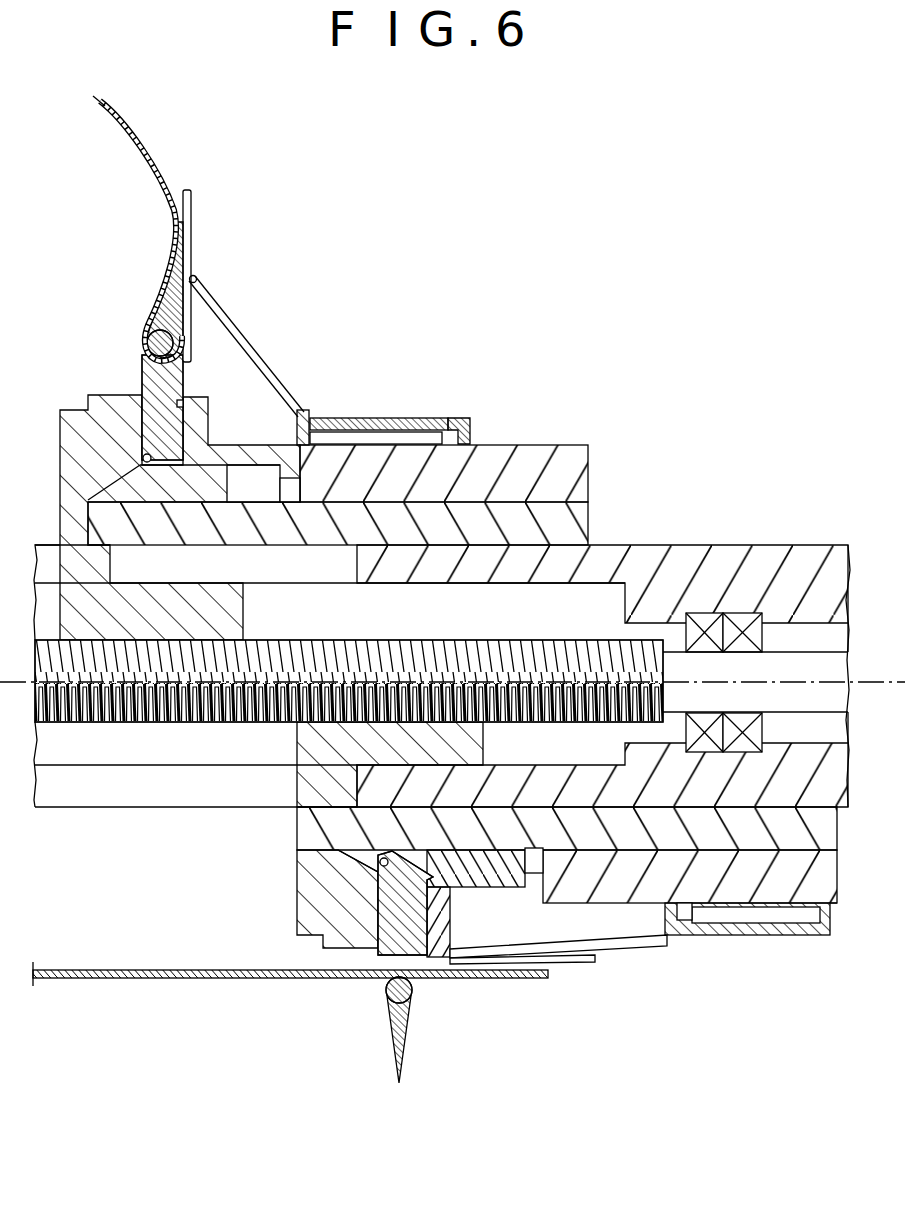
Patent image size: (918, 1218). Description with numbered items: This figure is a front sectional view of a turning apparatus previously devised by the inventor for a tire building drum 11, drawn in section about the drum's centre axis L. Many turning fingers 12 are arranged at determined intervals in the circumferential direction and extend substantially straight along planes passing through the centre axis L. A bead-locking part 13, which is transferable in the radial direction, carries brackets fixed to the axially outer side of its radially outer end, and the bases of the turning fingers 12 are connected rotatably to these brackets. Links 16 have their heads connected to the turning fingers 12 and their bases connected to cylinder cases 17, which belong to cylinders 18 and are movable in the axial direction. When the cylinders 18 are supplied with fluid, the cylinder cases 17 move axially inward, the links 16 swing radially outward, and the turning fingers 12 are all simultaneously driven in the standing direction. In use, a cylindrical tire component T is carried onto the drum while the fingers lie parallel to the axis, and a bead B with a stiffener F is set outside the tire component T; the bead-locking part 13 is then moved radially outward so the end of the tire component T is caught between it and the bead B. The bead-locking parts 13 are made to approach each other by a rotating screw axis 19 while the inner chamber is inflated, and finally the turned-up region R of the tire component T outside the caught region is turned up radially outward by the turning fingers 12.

The tire building drum 11 is at (503, 381).
The turning fingers 12 is at (193, 206).
The bead-locking part 13 is at (187, 375).
The links 16 is at (289, 374).
The cylinder cases 17 is at (368, 418).
The cylinders 18 is at (436, 414).
The rotating screw axis 19 is at (462, 636).
The centre axis L is at (745, 682).
The tire component T is at (138, 128).
The bead B is at (147, 339).
The stiffener F is at (162, 293).
The turned-up region R is at (184, 248).